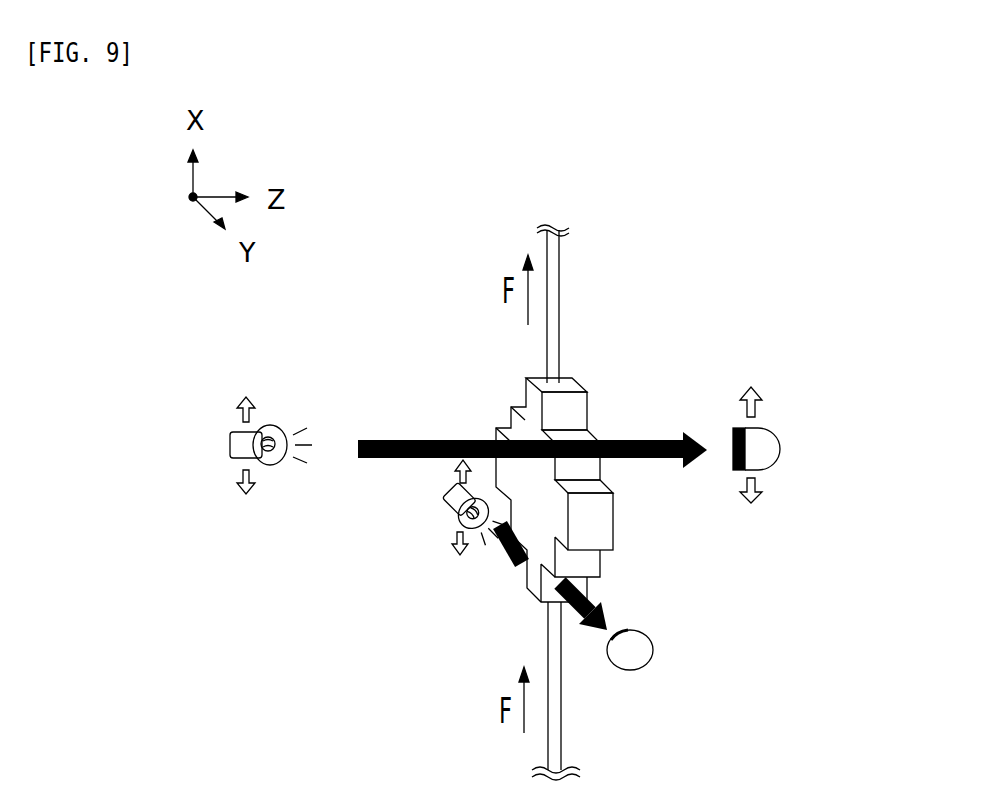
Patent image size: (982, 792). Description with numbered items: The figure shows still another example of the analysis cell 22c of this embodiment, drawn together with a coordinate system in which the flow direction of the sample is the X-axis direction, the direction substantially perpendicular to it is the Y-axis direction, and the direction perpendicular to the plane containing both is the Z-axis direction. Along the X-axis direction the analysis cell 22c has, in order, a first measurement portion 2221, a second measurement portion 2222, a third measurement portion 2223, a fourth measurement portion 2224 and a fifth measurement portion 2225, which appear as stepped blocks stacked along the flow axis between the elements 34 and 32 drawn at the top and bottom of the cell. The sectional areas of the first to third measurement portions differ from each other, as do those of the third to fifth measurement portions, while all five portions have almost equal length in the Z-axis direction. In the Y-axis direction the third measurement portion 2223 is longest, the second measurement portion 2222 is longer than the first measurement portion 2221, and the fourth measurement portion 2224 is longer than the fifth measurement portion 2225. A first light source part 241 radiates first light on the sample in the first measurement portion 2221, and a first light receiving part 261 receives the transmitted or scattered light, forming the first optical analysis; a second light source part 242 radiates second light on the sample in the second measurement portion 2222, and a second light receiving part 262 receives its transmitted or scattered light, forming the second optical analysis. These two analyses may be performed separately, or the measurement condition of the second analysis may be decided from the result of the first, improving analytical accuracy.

The analysis cell 22c is at (496, 398).
The first measurement portion 2221 is at (575, 410).
The second measurement portion 2222 is at (597, 468).
The third measurement portion 2223 is at (597, 522).
The fourth measurement portion 2224 is at (597, 565).
The fifth measurement portion 2225 is at (527, 583).
The first shaft 32 is at (561, 710).
The second shaft 34 is at (560, 283).
The first light source part 241 is at (452, 503).
The second light source part 242 is at (230, 443).
The first light receiving part 261 is at (653, 657).
The second light receiving part 262 is at (780, 448).